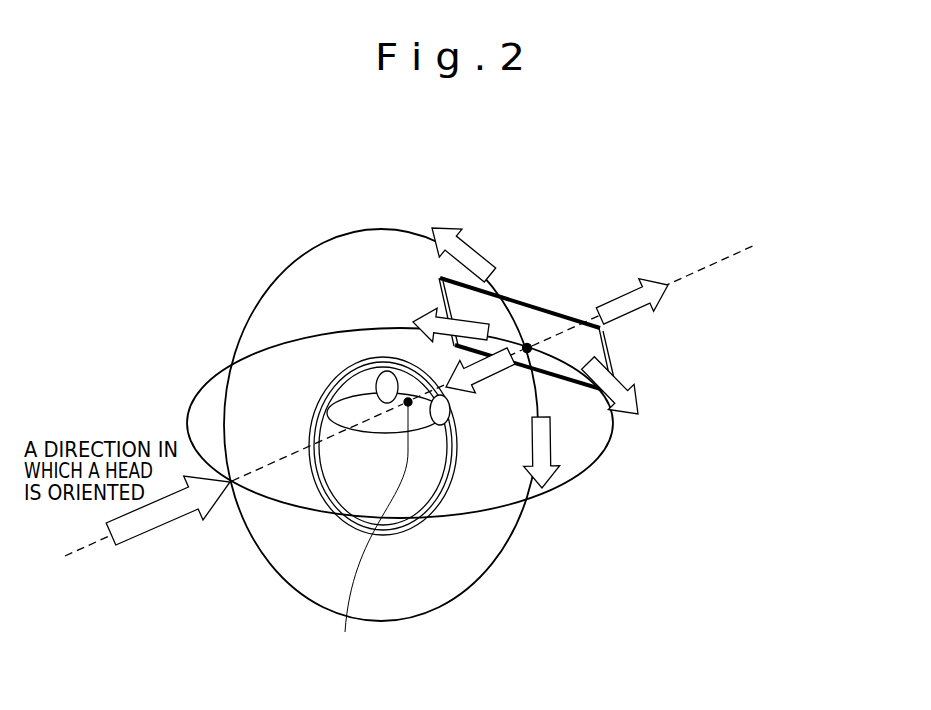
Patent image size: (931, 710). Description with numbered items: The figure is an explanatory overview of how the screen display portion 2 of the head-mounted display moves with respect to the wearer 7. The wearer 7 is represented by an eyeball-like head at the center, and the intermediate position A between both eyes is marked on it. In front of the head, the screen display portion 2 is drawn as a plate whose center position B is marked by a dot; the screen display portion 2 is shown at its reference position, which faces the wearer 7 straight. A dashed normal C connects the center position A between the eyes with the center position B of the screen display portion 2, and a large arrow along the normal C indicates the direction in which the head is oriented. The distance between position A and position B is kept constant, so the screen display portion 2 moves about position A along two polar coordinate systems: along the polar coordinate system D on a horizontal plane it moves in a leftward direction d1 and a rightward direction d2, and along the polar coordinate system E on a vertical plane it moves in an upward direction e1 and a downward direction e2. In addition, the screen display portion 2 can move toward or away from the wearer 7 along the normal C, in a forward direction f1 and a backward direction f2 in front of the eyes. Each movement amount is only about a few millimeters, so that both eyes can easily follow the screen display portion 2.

The screen display portion 2 is at (662, 355).
The wearer 7 is at (440, 505).
The intermediate position between both eyes A is at (373, 537).
The center position of the screen display portion B is at (527, 344).
The normal C is at (683, 278).
The polar coordinate system on a horizontal plane D is at (190, 414).
The polar coordinate system on a vertical plane E is at (258, 303).
The leftward direction d1 is at (426, 314).
The rightward direction d2 is at (638, 414).
The upward direction e1 is at (470, 243).
The downward direction e2 is at (550, 457).
The forward direction f1 is at (483, 388).
The backward direction f2 is at (630, 286).